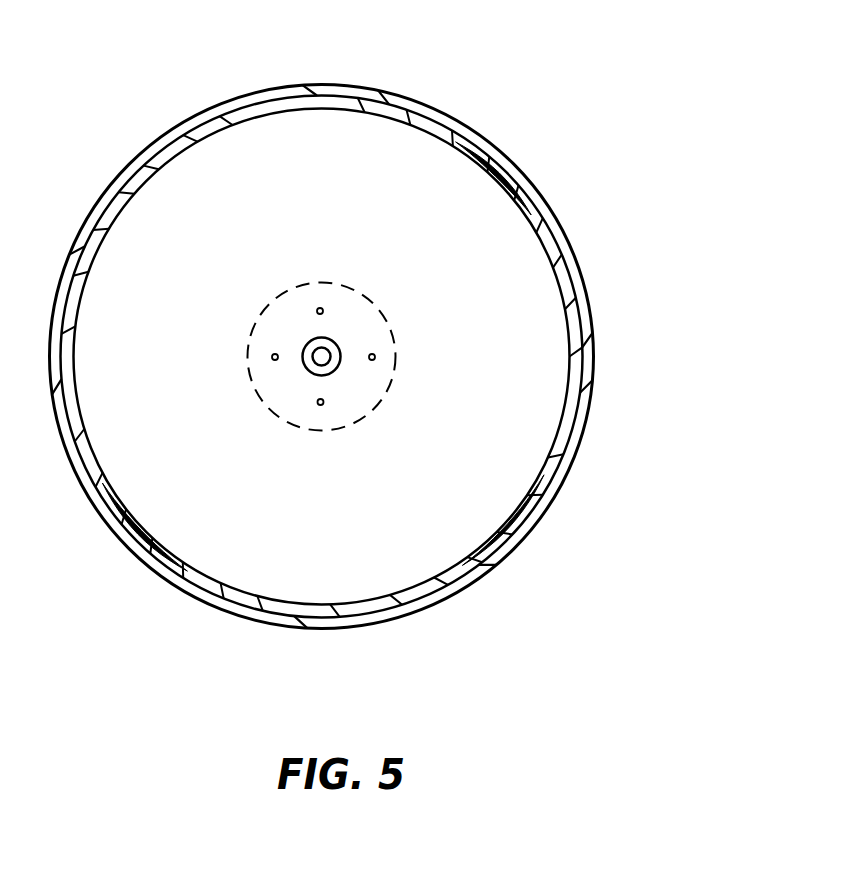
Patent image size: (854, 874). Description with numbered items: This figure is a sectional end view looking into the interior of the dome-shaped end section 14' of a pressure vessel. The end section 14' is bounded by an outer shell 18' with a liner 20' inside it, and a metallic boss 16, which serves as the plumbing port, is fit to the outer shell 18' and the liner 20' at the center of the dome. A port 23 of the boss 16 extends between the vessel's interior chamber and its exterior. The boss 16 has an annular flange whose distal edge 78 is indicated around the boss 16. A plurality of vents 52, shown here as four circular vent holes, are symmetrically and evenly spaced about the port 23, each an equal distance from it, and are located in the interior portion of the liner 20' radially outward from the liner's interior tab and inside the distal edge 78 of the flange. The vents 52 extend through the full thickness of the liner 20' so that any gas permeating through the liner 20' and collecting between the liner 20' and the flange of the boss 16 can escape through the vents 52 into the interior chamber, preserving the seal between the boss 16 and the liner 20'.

The end section 14' is at (323, 323).
The outer shell 18' is at (359, 356).
The liner 20' is at (379, 357).
The port 23 is at (331, 356).
The distal edge 78 is at (408, 288).
The boss 16 is at (338, 371).
The vents 52 is at (319, 308).